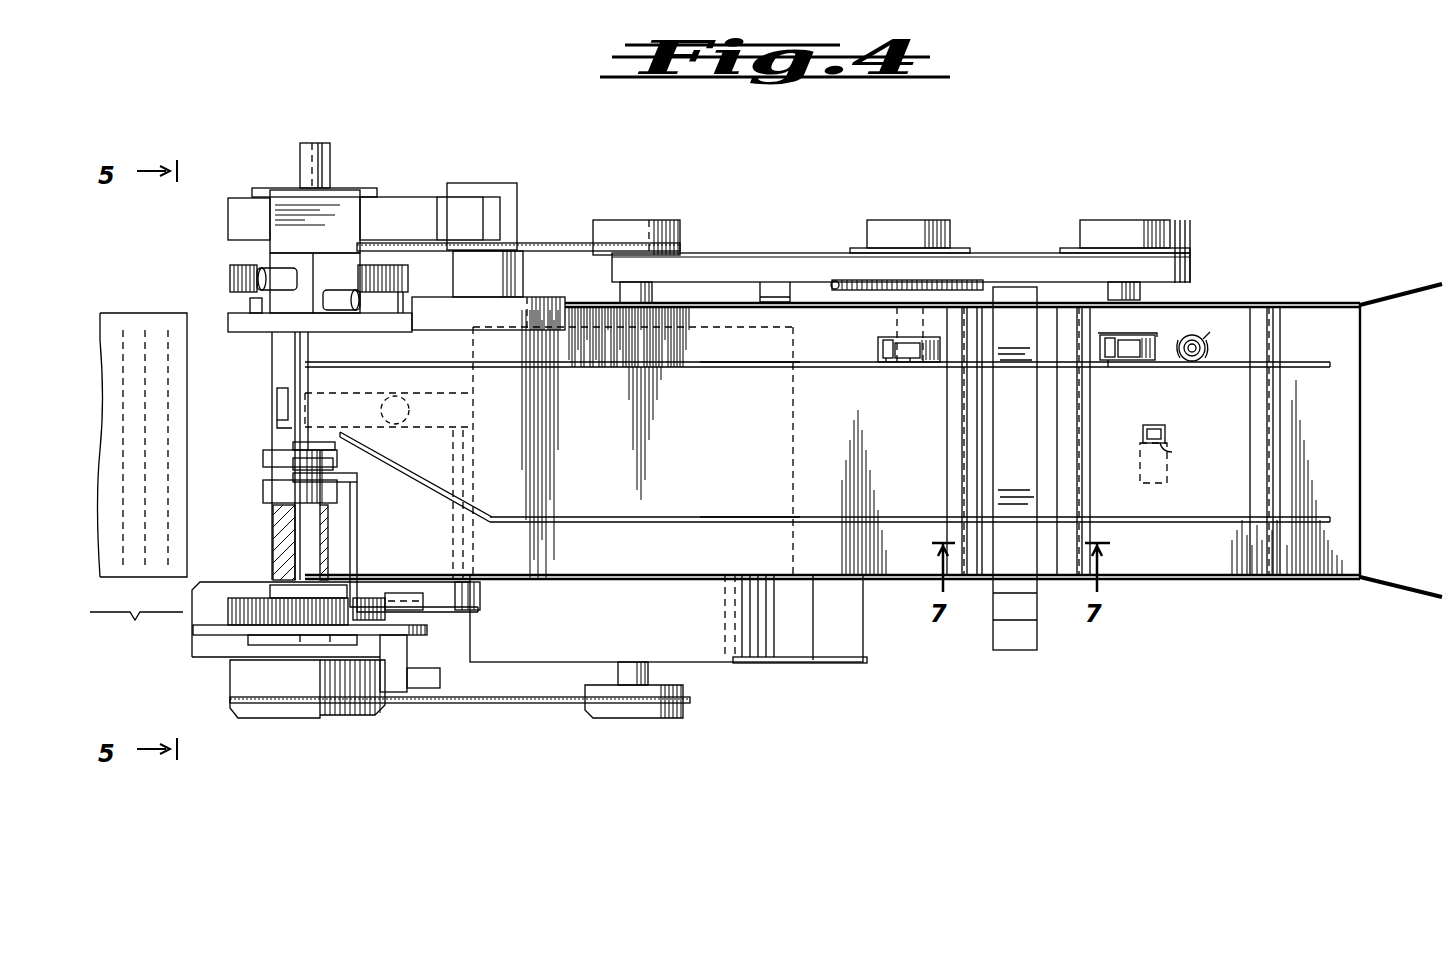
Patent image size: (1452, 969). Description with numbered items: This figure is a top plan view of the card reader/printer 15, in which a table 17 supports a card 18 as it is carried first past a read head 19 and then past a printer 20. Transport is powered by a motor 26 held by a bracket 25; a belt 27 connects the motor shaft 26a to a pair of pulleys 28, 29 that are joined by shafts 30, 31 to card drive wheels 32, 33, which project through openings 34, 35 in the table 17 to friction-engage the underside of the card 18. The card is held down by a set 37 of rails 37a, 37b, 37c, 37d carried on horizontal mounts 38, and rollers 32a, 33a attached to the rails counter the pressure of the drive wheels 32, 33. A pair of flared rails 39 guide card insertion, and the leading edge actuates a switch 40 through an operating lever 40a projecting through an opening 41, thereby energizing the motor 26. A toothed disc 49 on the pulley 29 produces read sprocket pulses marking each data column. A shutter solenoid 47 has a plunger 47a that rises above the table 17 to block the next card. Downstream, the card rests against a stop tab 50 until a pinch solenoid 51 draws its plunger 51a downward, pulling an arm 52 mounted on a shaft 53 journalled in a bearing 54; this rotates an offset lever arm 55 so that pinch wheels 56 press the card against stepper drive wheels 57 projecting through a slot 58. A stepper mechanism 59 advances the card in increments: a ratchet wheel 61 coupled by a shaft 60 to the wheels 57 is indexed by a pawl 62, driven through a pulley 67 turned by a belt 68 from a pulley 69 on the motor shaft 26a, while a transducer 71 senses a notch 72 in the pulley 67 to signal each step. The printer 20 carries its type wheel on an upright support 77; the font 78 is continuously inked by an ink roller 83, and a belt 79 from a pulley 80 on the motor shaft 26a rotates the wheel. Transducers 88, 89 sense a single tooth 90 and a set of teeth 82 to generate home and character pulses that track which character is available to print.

The card reader/printer 15 is at (767, 232).
The table 17 is at (744, 456).
The card 18 is at (175, 606).
The read head 19 is at (1019, 458).
The printer 20 is at (180, 292).
The bracket 25 is at (836, 664).
The motor 26 is at (644, 622).
The motor shaft 26a is at (640, 300).
The belt 27 is at (779, 268).
The pulley 28 is at (1118, 226).
The pulley 29 is at (890, 226).
The shaft 30 is at (1140, 290).
The shaft 31 is at (895, 326).
The card drive wheel 32 is at (1150, 363).
The roller 32a is at (1108, 367).
The card drive wheel 33 is at (888, 366).
The roller 33a is at (910, 366).
The opening 34 is at (1152, 337).
The opening 35 is at (878, 347).
The set of rails 37 is at (827, 503).
The rail 37a is at (1335, 363).
The rail 37b is at (1335, 520).
The rail 37c is at (766, 369).
The rail 37d is at (762, 516).
The horizontal mount 38 is at (952, 490).
The flared rail 39 is at (1394, 290).
The switch 40 is at (1158, 483).
The operating lever 40a is at (1167, 434).
The opening 41 is at (1172, 452).
The shutter solenoid 47 is at (1213, 366).
The plunger 47a is at (1203, 339).
The toothed disc 49 is at (968, 278).
The stop tab 50 is at (276, 398).
The pinch solenoid 51 is at (393, 392).
The plunger 51a is at (417, 401).
The arm 52 is at (340, 360).
The shaft 53 is at (452, 503).
The bearing 54 is at (480, 597).
The offset lever arm 55 is at (358, 531).
The pinch wheels 56 is at (340, 478).
The stepper drive wheels 57 is at (263, 491).
The slot 58 is at (293, 446).
The stepper mechanism 59 is at (212, 680).
The shaft 60 is at (285, 543).
The ratchet wheel 61 is at (235, 606).
The pawl 62 is at (398, 598).
The pulley 67 is at (243, 686).
The belt 68 is at (510, 704).
The pulley 69 is at (685, 709).
The transducer 71 is at (437, 702).
The notch 72 is at (320, 682).
The upright support 77 is at (228, 234).
The font 78 is at (229, 333).
The belt 79 is at (554, 243).
The pulley 80 is at (640, 230).
The teeth 82 is at (372, 275).
The ink roller 83 is at (547, 297).
The transducer 88 is at (347, 305).
The transducer 89 is at (230, 274).
The tooth 90 is at (250, 303).